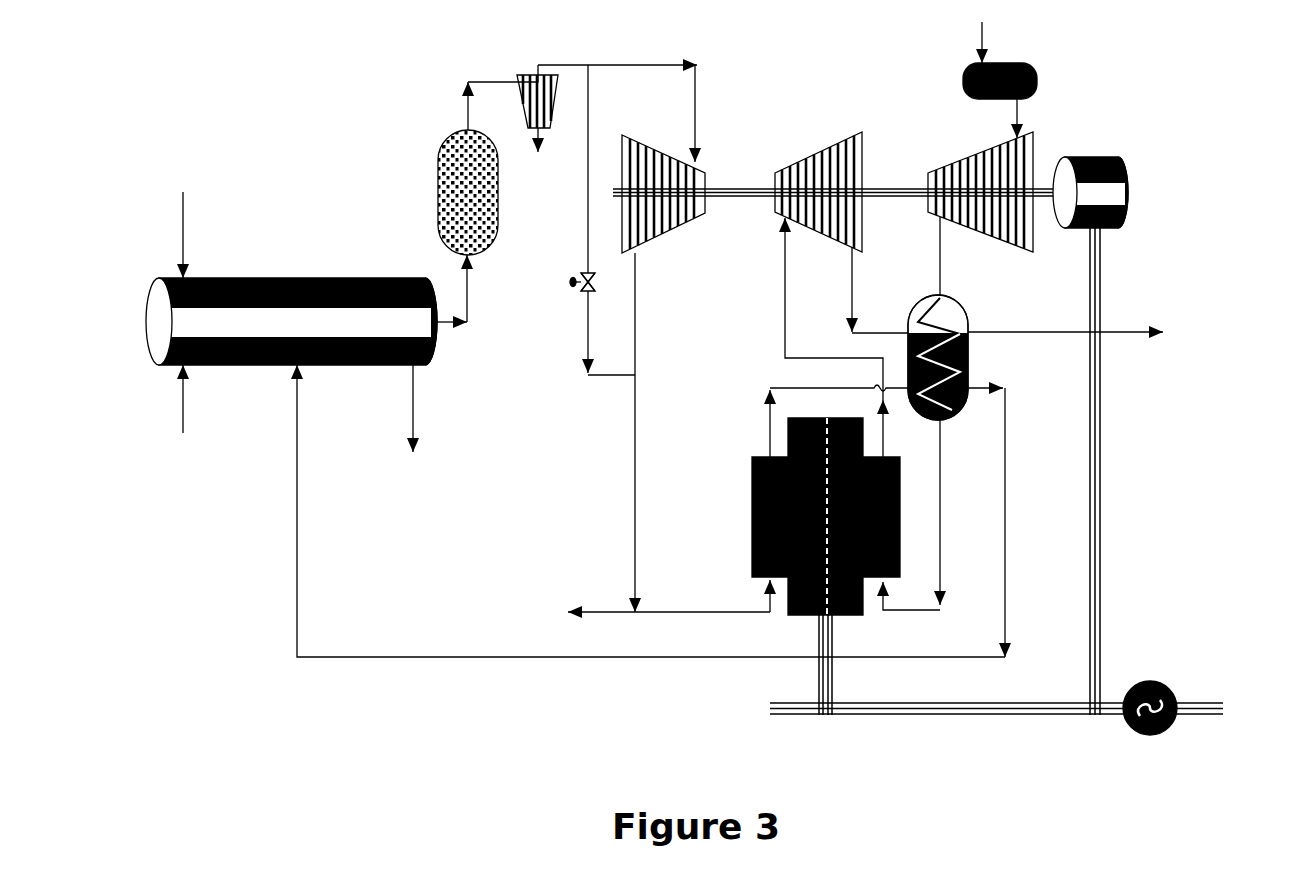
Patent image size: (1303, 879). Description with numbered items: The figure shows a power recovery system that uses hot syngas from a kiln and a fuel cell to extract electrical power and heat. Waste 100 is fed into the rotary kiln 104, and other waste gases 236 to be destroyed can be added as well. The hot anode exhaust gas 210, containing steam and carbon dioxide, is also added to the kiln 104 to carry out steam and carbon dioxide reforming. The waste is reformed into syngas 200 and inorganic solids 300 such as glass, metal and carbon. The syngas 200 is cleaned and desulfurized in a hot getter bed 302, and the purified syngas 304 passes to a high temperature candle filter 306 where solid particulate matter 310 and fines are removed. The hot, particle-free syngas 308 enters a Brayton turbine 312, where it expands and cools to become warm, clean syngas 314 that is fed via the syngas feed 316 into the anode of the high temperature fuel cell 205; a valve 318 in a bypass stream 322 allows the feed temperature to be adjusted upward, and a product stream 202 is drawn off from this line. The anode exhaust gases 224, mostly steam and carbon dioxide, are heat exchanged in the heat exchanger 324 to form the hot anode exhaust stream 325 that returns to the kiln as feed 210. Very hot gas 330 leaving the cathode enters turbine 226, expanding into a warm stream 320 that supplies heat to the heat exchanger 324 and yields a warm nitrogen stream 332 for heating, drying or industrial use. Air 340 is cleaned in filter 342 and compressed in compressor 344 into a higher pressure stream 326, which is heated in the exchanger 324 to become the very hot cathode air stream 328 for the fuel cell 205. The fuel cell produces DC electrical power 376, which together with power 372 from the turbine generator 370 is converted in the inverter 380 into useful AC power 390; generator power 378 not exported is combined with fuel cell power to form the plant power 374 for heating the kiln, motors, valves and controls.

The waste 100 is at (183, 222).
The rotary kiln 104 is at (158, 335).
The other waste gases 236 is at (183, 412).
The hot anode exhaust gas 210 is at (297, 543).
The inorganic solids 300 is at (407, 427).
The syngas 200 is at (443, 330).
The hot getter bed 302 is at (440, 192).
The purified syngas 304 is at (463, 107).
The high temperature candle filter 306 is at (528, 70).
The hot, cleaned, particle-free syngas 308 is at (633, 63).
The solid particulate matter 310 is at (542, 153).
The Brayton turbine 312 is at (650, 237).
The valve 318 is at (583, 292).
The bypass stream 322 is at (603, 375).
The warm, clean syngas 314 is at (635, 458).
The product stream out 202 is at (602, 612).
The syngas feed 316 is at (725, 613).
The high temperature fuel cell 205 is at (762, 492).
The anode exhaust gases 224 is at (770, 433).
The hot anode exhaust stream 325 is at (1007, 487).
The very hot gas 330 is at (785, 333).
The turbine 226 is at (828, 152).
The warm stream 320 is at (850, 265).
The higher pressure stream 326 is at (940, 275).
The heat exchanger 324 is at (965, 310).
The warm stream of nitrogen 332 is at (1123, 333).
The very hot cathode air stream 328 is at (940, 513).
The compressor 344 is at (985, 153).
The air 340 is at (980, 45).
The filter 342 is at (1033, 68).
The turbine generator 370 is at (1120, 172).
The generator power 372 is at (1101, 432).
The DC electrical power 376 is at (830, 667).
The plant power 374 is at (790, 715).
The non-exported generator power 378 is at (963, 712).
The inverter 380 is at (1128, 718).
The AC power 390 is at (1195, 700).